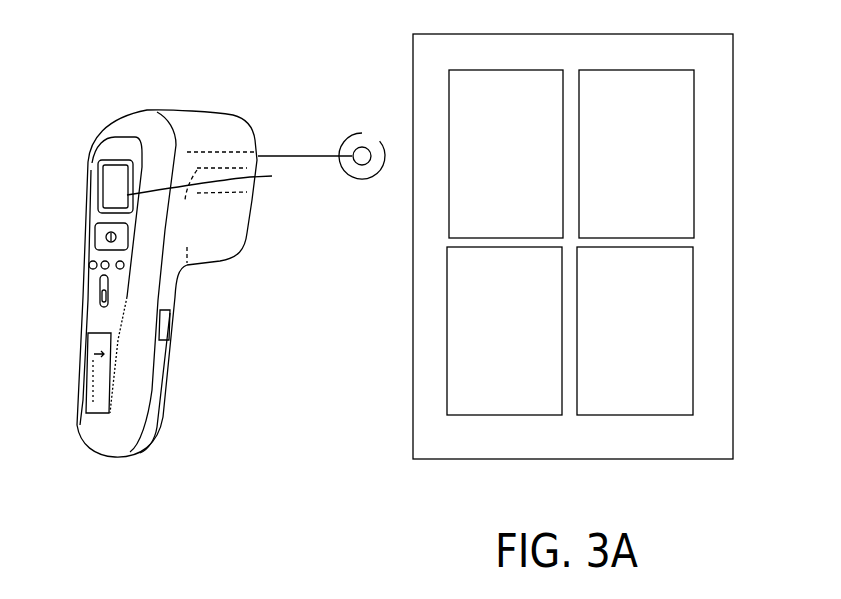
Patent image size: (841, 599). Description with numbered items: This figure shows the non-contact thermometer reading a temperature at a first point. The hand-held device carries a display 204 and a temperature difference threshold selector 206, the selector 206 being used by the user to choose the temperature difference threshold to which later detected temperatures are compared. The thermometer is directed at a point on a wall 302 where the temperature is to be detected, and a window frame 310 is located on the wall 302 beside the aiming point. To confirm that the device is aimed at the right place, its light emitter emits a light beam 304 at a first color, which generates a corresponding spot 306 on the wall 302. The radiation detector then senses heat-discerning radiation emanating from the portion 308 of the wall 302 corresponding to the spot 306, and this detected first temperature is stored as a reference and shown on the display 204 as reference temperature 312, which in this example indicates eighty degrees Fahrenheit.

The display 204 is at (103, 188).
The temperature difference threshold selector 206 is at (88, 340).
The wall 302 is at (185, 43).
The light beam 304 is at (307, 153).
The spot 306 is at (363, 165).
The portion of wall 308 is at (370, 135).
The window frame 310 is at (735, 85).
The reference temperature 312 is at (214, 180).